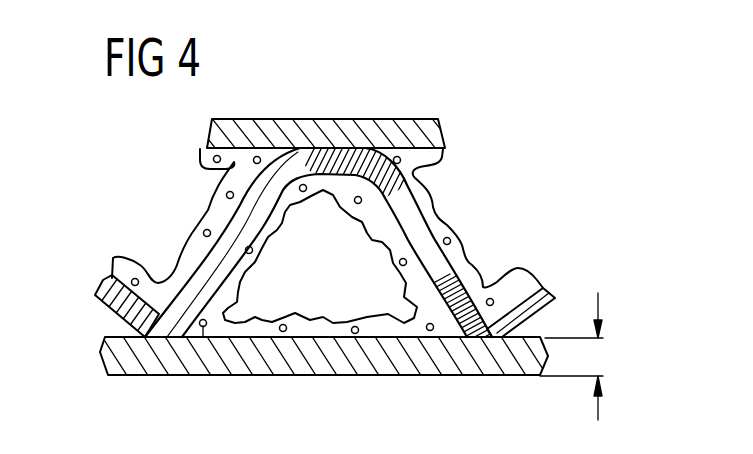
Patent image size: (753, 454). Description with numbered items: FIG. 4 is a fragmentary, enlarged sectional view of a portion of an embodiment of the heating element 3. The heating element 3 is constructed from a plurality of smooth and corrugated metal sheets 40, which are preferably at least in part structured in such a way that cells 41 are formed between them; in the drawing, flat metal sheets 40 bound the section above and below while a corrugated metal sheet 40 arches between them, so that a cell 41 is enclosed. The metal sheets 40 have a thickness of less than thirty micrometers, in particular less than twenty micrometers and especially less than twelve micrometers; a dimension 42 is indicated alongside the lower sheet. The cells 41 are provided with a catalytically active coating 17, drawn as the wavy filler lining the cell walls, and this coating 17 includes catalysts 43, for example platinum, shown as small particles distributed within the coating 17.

The heating element 3 is at (562, 148).
The catalytically active coating 17 is at (392, 324).
The metal sheets 40 is at (440, 132).
The cells 41 is at (325, 310).
The layer thickness 42 is at (578, 356).
The catalysts 43 is at (203, 338).